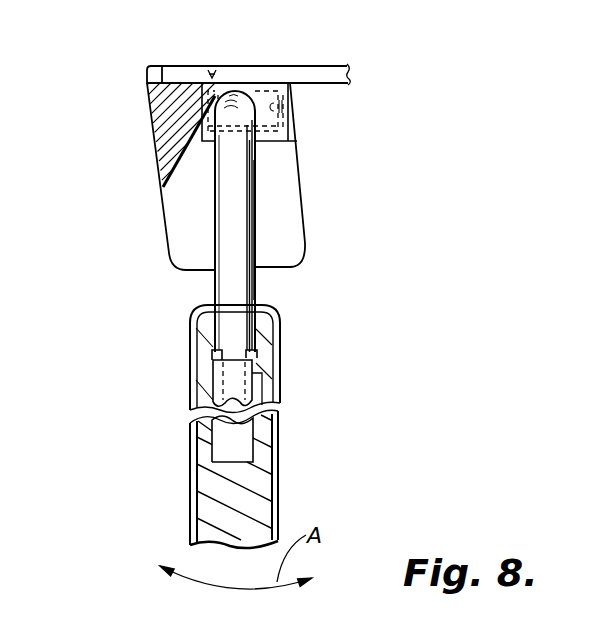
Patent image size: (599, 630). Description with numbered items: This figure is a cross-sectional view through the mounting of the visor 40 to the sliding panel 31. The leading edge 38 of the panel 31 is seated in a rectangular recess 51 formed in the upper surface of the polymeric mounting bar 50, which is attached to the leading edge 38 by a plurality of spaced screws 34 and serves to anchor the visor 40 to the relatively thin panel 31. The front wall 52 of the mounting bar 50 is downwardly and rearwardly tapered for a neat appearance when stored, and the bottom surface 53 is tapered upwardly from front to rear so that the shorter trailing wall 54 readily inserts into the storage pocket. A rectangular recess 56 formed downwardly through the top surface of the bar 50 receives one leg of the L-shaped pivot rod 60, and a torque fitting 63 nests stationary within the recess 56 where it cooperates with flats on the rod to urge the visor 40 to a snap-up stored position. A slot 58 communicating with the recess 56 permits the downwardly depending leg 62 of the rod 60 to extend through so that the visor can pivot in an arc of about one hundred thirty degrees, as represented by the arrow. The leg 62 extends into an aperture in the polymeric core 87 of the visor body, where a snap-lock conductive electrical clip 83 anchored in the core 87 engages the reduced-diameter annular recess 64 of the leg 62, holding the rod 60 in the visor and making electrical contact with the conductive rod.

The panel 31 is at (323, 67).
The screws 34 is at (218, 63).
The leading edge 38 is at (148, 64).
The visor 40 is at (295, 500).
The mounting bar 50 is at (318, 216).
The rectangular recess 51 is at (192, 82).
The front wall 52 is at (160, 197).
The bottom surface 53 is at (292, 268).
The trailing wall 54 is at (302, 180).
The rectangular recess 56 is at (297, 145).
The slot 58 is at (190, 218).
The L-shaped pivot rod 60 is at (271, 291).
The leg 62 is at (217, 285).
The torque fitting 63 is at (297, 111).
The annular recess 64 is at (252, 357).
The electrical clip 83 is at (258, 381).
The polymeric core 87 is at (253, 473).